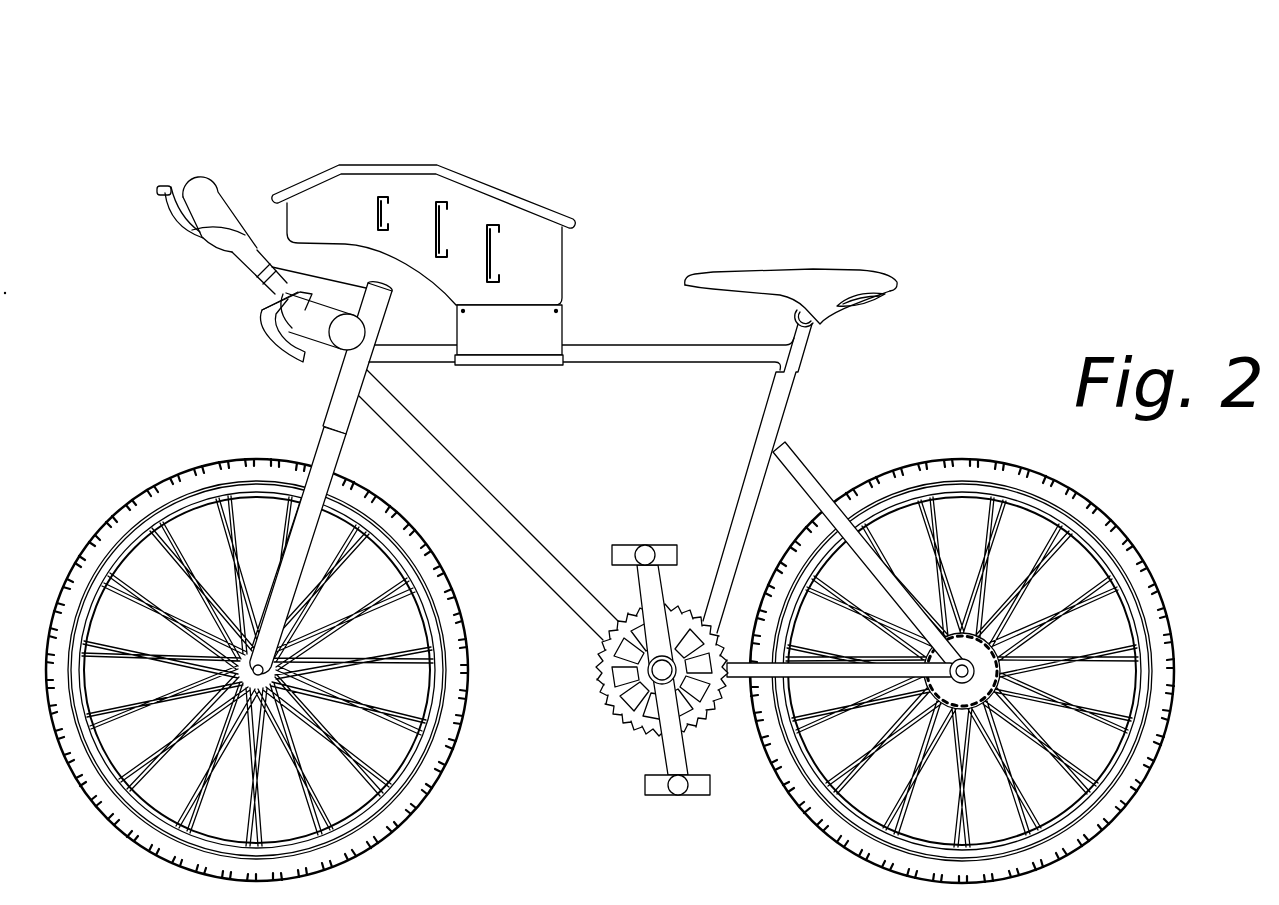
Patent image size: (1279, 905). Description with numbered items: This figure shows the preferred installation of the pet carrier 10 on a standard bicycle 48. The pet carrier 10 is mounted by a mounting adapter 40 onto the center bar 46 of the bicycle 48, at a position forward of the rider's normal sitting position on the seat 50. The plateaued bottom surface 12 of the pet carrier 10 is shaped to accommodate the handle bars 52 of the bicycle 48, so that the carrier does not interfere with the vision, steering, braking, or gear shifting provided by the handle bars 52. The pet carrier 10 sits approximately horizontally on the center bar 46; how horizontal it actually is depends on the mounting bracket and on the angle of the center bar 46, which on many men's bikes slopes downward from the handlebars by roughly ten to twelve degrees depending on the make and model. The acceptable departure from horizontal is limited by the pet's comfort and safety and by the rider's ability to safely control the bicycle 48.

The pet carrier 10 is at (385, 162).
The plateaued bottom surface 12 is at (260, 215).
The mounting adapter 40 is at (515, 342).
The center bar 46 is at (620, 355).
The bicycle 48 is at (963, 290).
The seat 50 is at (813, 276).
The handle bars 52 is at (268, 291).